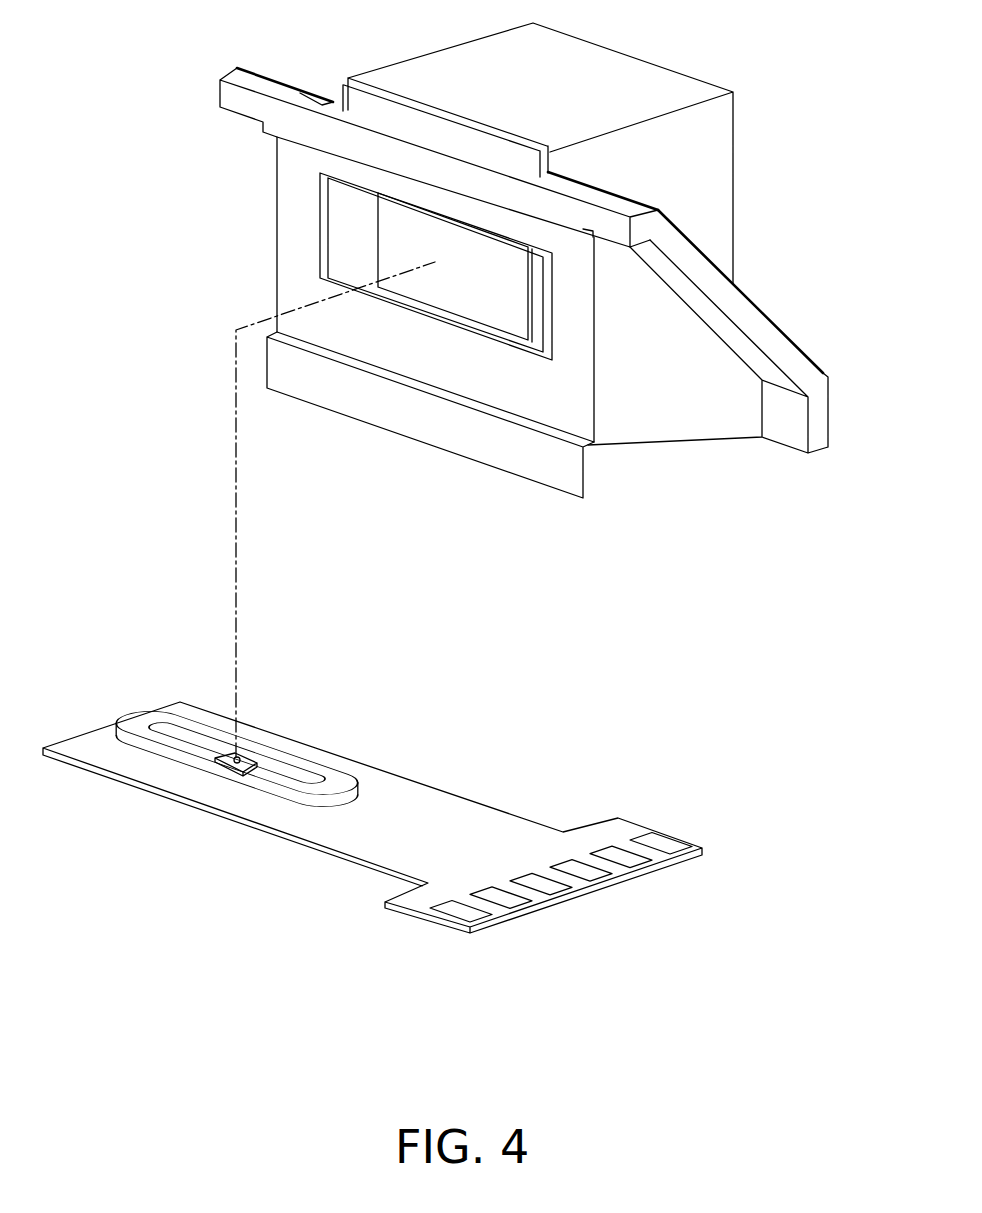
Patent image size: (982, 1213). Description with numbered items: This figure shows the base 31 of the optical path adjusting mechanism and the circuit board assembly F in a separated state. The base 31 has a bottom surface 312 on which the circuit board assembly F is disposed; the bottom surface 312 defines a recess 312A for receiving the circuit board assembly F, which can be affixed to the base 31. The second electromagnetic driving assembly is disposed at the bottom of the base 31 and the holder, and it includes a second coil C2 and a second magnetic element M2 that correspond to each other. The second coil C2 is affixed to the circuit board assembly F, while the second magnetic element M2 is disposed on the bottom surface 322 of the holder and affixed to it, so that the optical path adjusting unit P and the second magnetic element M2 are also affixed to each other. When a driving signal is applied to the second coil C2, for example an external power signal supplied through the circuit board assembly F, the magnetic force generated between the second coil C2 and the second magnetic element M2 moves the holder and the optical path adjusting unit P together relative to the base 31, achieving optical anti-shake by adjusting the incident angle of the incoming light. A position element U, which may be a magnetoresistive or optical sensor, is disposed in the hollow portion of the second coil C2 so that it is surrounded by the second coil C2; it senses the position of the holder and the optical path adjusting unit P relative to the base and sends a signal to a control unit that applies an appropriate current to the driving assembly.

The optical path adjusting unit P is at (615, 62).
The base 31 is at (685, 448).
The bottom surface 312 is at (467, 435).
The recess 312A is at (578, 387).
The bottom surface 322 is at (347, 212).
The second magnetic element M2 is at (392, 248).
The second coil C2 is at (140, 727).
The position element U is at (250, 760).
The circuit board assembly F is at (620, 828).